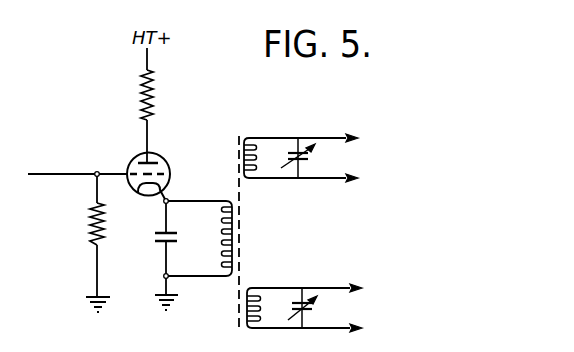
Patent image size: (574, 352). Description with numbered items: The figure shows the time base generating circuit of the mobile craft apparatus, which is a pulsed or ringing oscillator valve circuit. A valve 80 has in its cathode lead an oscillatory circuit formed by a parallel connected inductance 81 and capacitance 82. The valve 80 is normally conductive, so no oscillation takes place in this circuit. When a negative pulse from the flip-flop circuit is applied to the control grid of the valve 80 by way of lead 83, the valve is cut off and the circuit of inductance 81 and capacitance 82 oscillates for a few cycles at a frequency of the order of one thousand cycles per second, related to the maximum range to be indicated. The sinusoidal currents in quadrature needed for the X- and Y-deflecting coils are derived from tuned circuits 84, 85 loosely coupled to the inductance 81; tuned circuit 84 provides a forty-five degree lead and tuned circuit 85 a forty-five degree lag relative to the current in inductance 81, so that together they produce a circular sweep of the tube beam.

The valve 80 is at (169, 161).
The inductance 81 is at (236, 235).
The capacitance 82 is at (158, 243).
The lead 83 is at (76, 174).
The tuned circuit 84 is at (285, 137).
The tuned circuit 85 is at (279, 288).